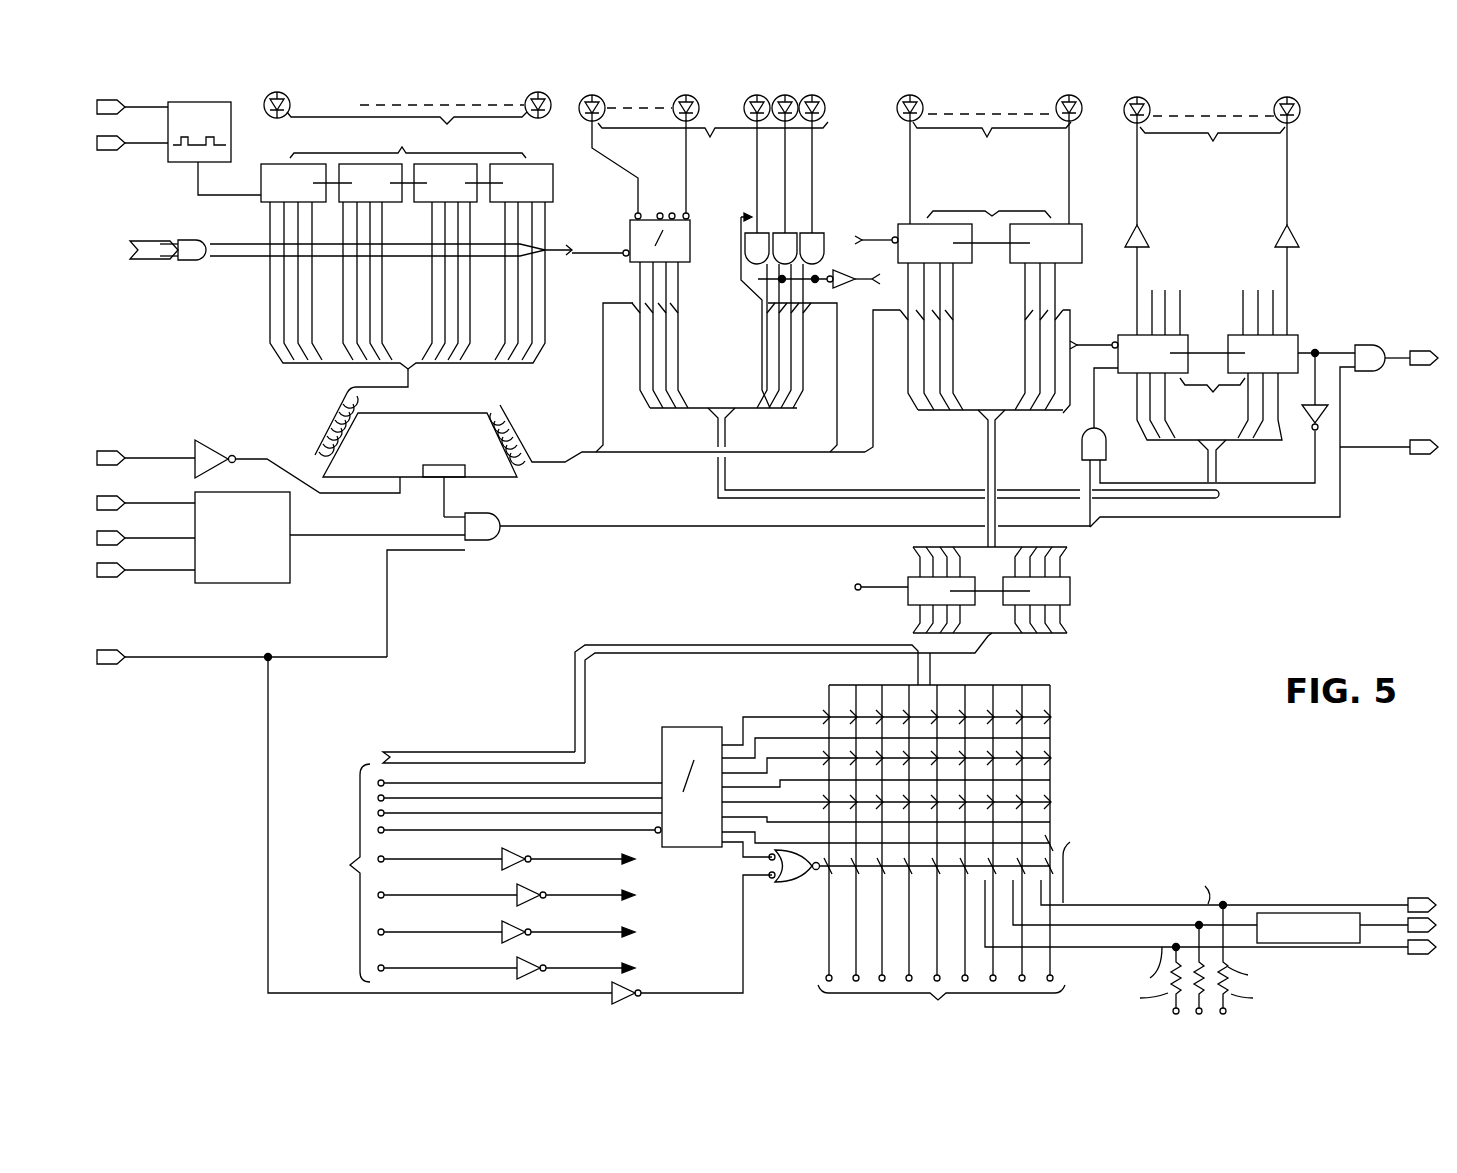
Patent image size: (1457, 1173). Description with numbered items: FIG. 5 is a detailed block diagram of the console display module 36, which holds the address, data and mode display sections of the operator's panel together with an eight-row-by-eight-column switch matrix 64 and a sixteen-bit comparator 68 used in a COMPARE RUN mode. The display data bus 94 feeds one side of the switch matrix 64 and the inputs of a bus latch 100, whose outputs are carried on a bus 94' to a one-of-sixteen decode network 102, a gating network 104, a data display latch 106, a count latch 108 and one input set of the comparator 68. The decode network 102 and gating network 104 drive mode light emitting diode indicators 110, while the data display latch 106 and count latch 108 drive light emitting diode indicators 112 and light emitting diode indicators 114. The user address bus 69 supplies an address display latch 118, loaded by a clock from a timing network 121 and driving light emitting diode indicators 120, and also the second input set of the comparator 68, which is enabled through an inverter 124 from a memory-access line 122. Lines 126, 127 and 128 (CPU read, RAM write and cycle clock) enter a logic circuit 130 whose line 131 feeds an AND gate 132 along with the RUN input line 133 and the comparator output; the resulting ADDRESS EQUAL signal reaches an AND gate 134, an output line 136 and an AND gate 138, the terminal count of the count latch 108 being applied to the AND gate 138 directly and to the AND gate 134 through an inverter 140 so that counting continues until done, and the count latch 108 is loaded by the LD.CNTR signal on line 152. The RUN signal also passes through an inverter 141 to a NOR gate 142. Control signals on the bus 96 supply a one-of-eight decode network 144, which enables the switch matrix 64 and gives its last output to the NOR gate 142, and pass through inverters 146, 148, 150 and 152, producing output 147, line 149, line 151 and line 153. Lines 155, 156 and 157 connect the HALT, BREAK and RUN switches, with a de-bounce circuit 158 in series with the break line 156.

The timing network 121 is at (193, 88).
The address display latch 118 is at (410, 136).
The light emitting diode indicators 120 is at (447, 124).
The bus 69 is at (153, 240).
The light emitting diode indicators 110 is at (703, 154).
The one-of-sixteen decode network 102 is at (689, 235).
The gating network 104 is at (826, 228).
The line 149 is at (884, 239).
The line 153 is at (859, 277).
The data display latch 106 is at (993, 214).
The light emitting diode indicators 112 is at (989, 159).
The light emitting diode indicators 114 is at (1212, 214).
The console display module 36 is at (1340, 246).
The line 151 is at (1094, 342).
The inverter 140 is at (1328, 362).
The AND gate 138 is at (1365, 343).
The output line 136 is at (1356, 444).
The AND gate 134 is at (1082, 443).
The count latch 108 is at (1209, 427).
The sixteen-bit comparator 68 is at (445, 413).
The line 122 is at (107, 451).
The inverter 124 is at (214, 445).
The line 126 is at (120, 504).
The line 127 is at (125, 540).
The line 128 is at (125, 574).
The logic circuit 130 is at (262, 573).
The line 131 is at (372, 535).
The AND gate 132 is at (490, 540).
The bus 94' is at (968, 473).
The bus latch 100 is at (908, 583).
The output 147 is at (892, 600).
The input line 133 is at (134, 660).
The bus 96 is at (348, 865).
The display data bus 94 is at (687, 692).
The one-of-eight decode network 144 is at (674, 727).
The switch matrix 64 is at (808, 698).
The inverter 146 is at (520, 847).
The inverter 148 is at (535, 882).
The inverter 150 is at (520, 920).
The inverter 152 is at (543, 972).
The inverter 141 is at (641, 998).
The NOR gate 142 is at (786, 885).
The line 155 is at (1384, 905).
The line 156 is at (1370, 925).
The line 157 is at (1378, 948).
The de-bounce circuit 158 is at (1313, 913).